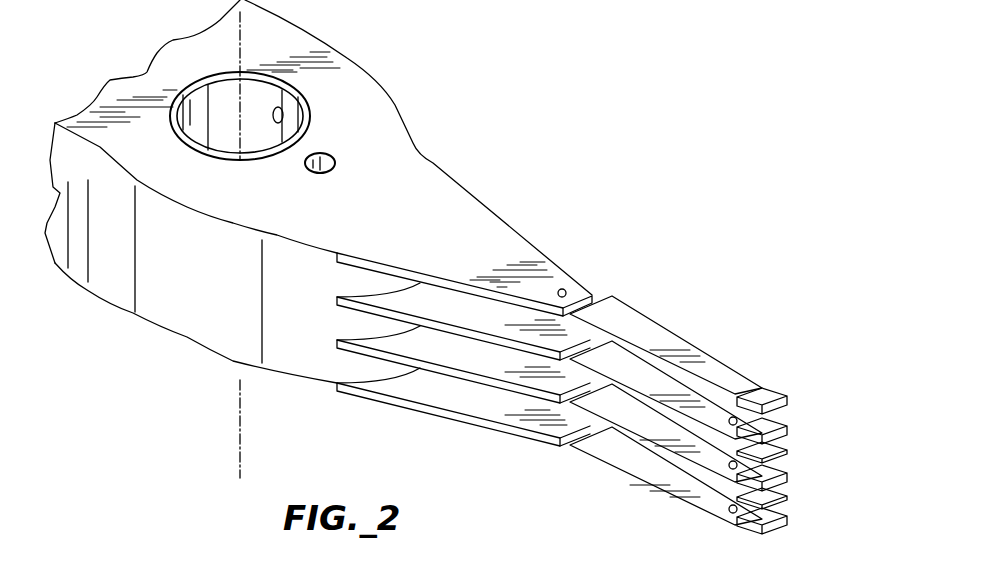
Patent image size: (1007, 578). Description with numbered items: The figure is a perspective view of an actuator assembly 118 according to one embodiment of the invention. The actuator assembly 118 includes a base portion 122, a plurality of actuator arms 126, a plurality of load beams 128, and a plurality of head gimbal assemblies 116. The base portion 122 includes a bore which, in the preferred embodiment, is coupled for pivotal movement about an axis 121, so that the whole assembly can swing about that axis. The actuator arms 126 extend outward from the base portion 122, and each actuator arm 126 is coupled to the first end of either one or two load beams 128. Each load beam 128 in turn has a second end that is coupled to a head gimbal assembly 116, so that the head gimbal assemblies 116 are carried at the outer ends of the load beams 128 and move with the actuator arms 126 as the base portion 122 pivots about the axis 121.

The head gimbal assembly 116 is at (793, 522).
The actuator assembly 118 is at (508, 193).
The axis 121 is at (238, 422).
The base portion 122 is at (363, 80).
The actuator arm 126 is at (447, 238).
The load beam 128 is at (640, 470).